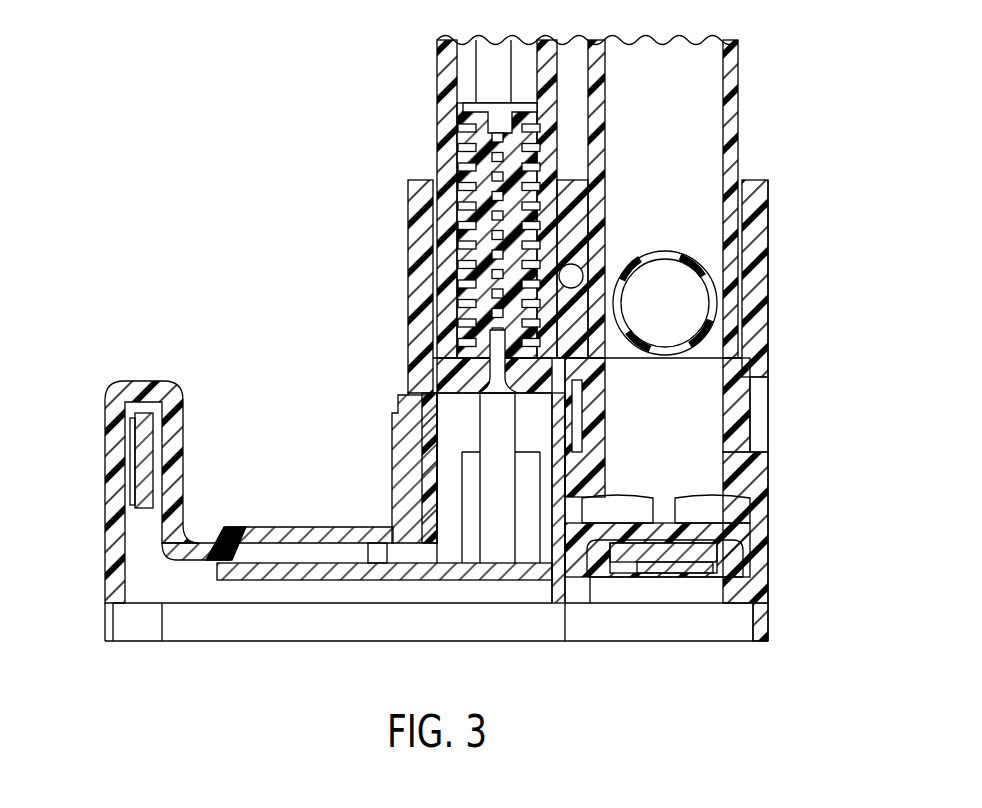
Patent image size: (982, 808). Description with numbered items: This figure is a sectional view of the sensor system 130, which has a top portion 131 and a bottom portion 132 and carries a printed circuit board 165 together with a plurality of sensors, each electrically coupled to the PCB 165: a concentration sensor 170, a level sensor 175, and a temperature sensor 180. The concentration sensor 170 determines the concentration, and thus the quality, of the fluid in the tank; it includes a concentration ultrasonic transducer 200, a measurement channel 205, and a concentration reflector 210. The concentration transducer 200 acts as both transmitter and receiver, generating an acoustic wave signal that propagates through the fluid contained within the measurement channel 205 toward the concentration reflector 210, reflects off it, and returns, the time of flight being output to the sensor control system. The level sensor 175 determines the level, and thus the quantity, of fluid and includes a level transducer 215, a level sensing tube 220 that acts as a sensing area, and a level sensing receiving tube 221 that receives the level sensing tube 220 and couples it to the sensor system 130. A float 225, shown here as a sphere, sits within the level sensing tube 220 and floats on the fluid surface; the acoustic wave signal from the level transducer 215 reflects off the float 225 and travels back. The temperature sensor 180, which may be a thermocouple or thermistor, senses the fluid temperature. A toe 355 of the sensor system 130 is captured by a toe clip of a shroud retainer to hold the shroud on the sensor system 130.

The sensor system 130 is at (264, 143).
The top portion 131 is at (360, 248).
The bottom portion 132 is at (543, 663).
The printed circuit board 165 is at (242, 582).
The concentration sensor 170 is at (125, 360).
The level sensor 175 is at (797, 527).
The temperature sensor 180 is at (377, 563).
The concentration ultrasonic transducer 200 is at (148, 509).
The measurement channel 205 is at (260, 415).
The concentration reflector 210 is at (393, 438).
The level transducer 215 is at (663, 563).
The level sensing tube 220 is at (740, 80).
The level sensing receiving tube 221 is at (768, 257).
The float 225 is at (688, 252).
The toe 355 is at (136, 665).